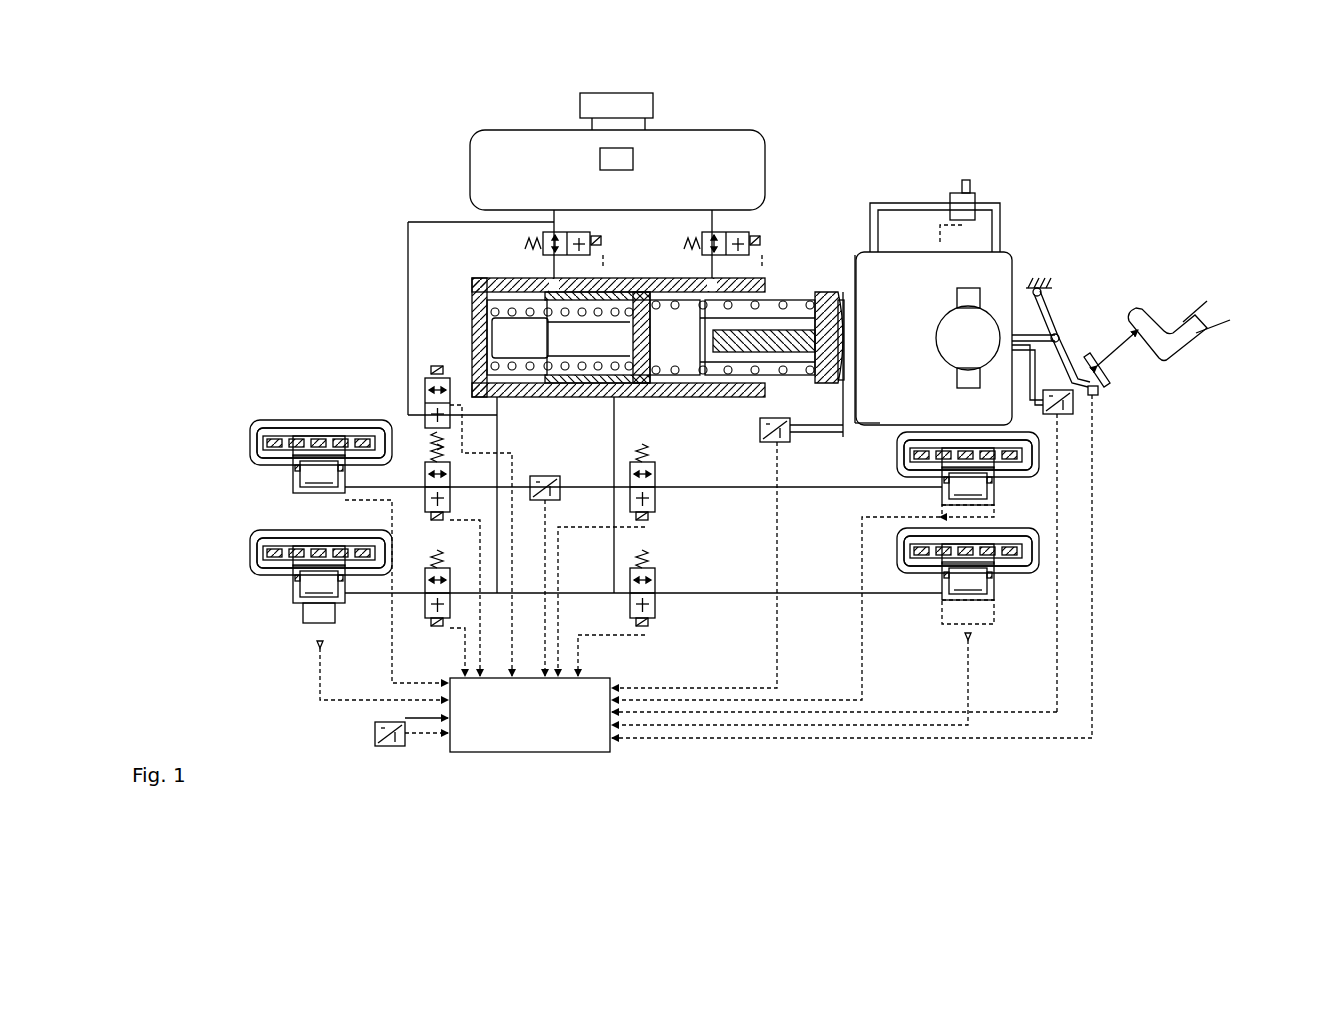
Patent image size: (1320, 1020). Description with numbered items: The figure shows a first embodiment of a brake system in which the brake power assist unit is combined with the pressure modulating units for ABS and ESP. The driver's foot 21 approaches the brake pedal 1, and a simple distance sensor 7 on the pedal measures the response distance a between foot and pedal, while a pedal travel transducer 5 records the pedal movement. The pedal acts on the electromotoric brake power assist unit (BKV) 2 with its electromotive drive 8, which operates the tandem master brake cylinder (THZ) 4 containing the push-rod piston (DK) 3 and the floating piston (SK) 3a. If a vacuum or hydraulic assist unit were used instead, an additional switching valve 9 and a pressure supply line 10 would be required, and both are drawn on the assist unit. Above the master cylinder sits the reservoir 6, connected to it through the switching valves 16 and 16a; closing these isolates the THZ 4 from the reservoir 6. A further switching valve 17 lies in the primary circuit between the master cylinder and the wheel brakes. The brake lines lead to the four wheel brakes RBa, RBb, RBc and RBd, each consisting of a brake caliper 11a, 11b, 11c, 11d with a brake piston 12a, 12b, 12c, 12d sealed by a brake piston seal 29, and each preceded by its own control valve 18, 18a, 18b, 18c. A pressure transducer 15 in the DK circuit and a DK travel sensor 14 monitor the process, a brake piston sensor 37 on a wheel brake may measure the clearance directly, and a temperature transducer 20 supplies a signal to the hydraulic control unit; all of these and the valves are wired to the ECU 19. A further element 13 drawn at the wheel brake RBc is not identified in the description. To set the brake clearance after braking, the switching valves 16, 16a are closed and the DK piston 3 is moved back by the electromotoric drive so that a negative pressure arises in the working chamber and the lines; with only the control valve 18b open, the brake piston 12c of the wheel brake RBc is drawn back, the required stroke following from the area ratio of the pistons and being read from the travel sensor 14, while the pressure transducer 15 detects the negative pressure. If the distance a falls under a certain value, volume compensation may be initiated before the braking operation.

The brake pedal 1 is at (1048, 312).
The brake power assist unit (BKV) 2 is at (912, 280).
The push-rod piston (DK piston) 3 is at (843, 290).
The floating piston (SK piston) 3a is at (485, 298).
The tandem master brake cylinder (THZ) 4 is at (470, 278).
The pedal travel transducer 5 is at (1073, 400).
The reservoir 6 is at (490, 170).
The distance sensor 7 is at (1107, 385).
The electromotive drive of the brake power assist unit 8 is at (1044, 283).
The switching valve 9 is at (995, 312).
The pressure supply line 10 is at (970, 200).
The brake caliper 11a is at (250, 425).
The brake caliper 11b is at (250, 552).
The brake caliper 11c is at (1042, 440).
The brake caliper 11d is at (1045, 555).
The brake piston 12a is at (315, 482).
The brake piston 12b is at (315, 578).
The brake piston 12c is at (982, 482).
The brake piston 12d is at (982, 583).
The caliper sensor signal line 13 is at (1000, 515).
The DK travel sensor 14 is at (760, 428).
The pressure transducer in the DK circuit 15 is at (545, 476).
The switching valve 16 is at (760, 228).
The switching valve 16a is at (520, 240).
The switching valve 17 is at (425, 395).
The control valve 18 is at (425, 505).
The control valve 18a is at (425, 625).
The control valve 18b is at (655, 505).
The control valve 18c is at (655, 622).
The ECU 19 is at (543, 752).
The temperature transducer 20 is at (388, 747).
The foot 21 is at (1200, 330).
The brake piston seal 29 is at (297, 482).
The brake piston sensor 37 is at (320, 615).
The wheel brake RBa is at (252, 440).
The wheel brake RBb is at (255, 585).
The wheel brake RBc is at (1045, 466).
The wheel brake RBd is at (1040, 580).
The response distance a is at (1117, 343).